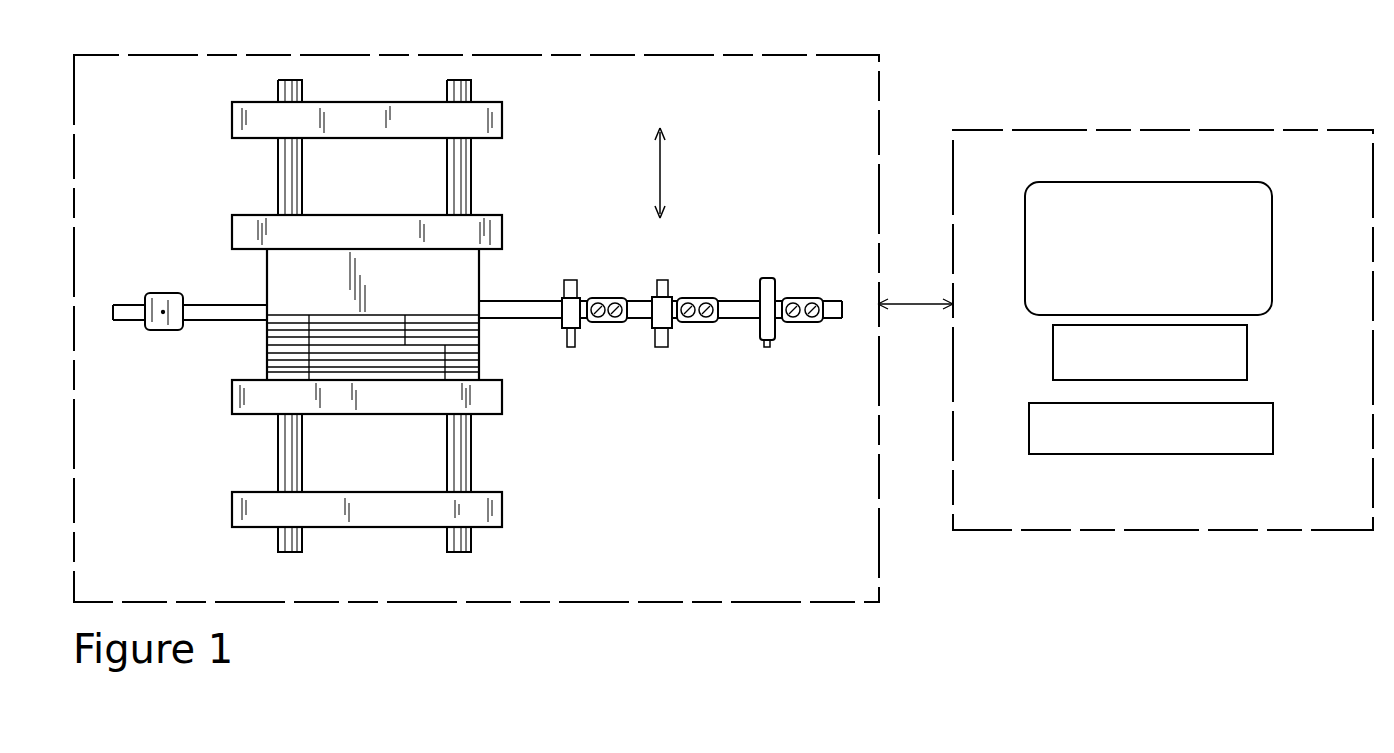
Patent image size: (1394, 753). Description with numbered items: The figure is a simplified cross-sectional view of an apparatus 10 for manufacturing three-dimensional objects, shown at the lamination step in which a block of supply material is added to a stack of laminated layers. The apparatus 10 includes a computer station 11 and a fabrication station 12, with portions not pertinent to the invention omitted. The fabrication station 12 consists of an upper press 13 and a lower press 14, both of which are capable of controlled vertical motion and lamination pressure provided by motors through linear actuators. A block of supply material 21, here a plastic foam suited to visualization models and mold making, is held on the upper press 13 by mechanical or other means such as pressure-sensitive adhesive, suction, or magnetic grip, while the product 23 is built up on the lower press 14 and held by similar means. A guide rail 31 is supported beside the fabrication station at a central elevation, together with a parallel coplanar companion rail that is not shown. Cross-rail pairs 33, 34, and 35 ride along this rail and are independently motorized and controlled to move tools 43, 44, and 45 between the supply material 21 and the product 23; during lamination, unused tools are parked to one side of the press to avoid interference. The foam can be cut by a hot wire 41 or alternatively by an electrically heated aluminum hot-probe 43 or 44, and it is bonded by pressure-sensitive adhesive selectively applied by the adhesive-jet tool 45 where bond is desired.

The apparatus 10 is at (1325, 58).
The computer station 11 is at (996, 524).
The fabrication station 12 is at (112, 590).
The upper press 13 is at (243, 222).
The lower press 14 is at (258, 397).
The supply material 21 is at (282, 278).
The product 23 is at (282, 343).
The guide rail 31 is at (498, 300).
The cross-rail pair 33 is at (592, 300).
The cross-rail pair 34 is at (688, 300).
The cross-rail pair 35 is at (797, 300).
The hot wire 41 is at (163, 303).
The hot-probe 43 is at (575, 342).
The hot-probe 44 is at (668, 345).
The adhesive-jet tool 45 is at (763, 345).